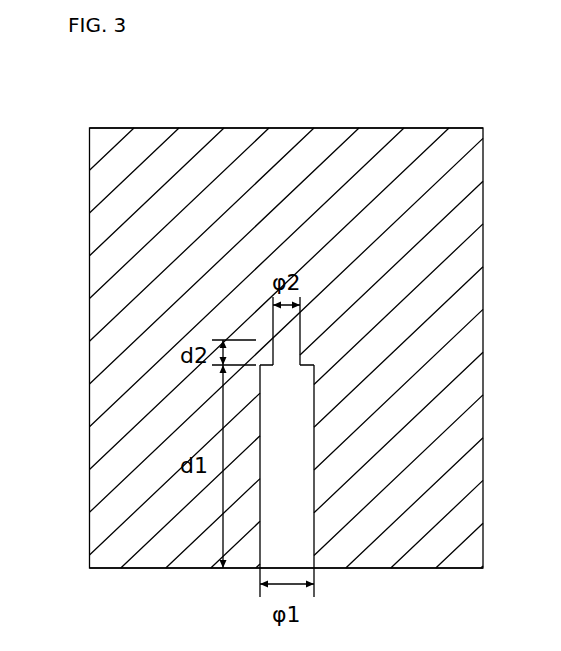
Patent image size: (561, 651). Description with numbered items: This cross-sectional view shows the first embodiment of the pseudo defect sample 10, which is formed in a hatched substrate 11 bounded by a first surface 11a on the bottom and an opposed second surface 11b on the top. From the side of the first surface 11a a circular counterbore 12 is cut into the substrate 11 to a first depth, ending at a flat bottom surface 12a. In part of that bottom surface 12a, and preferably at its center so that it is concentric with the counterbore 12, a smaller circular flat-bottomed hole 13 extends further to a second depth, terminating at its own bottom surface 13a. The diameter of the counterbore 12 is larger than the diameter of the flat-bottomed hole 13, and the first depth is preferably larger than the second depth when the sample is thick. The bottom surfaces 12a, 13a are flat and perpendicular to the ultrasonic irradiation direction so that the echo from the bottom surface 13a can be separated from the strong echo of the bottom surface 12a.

The pseudo defect sample 10 is at (289, 122).
The substrate 11 is at (161, 140).
The first surface 11a is at (395, 568).
The second surface 11b is at (395, 128).
The counterbore 12 is at (295, 464).
The bottom surface of the counterbore 12a is at (305, 368).
The flat-bottomed hole 13 is at (300, 355).
The bottom surface of the flat-bottomed hole 13a is at (299, 341).